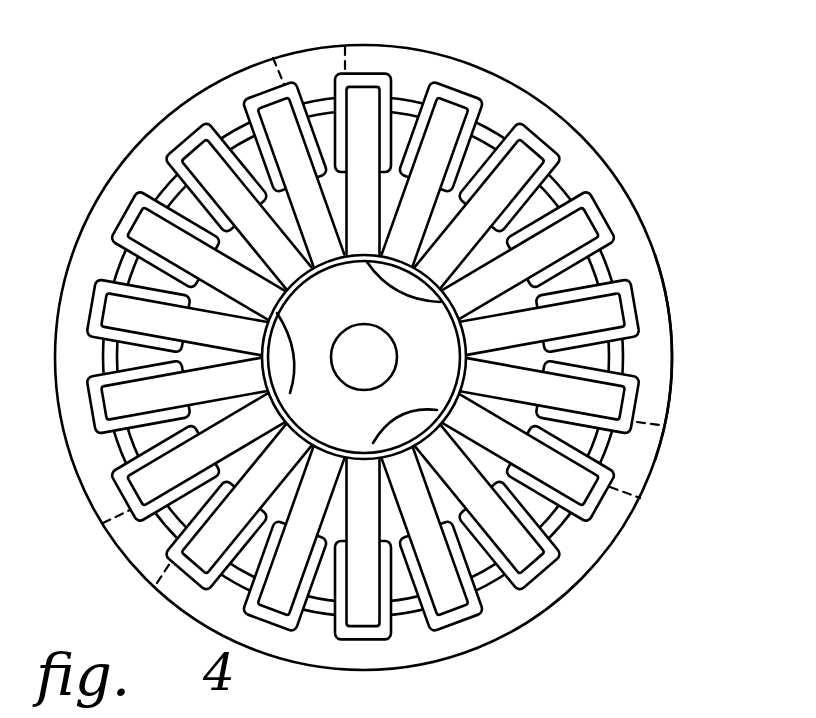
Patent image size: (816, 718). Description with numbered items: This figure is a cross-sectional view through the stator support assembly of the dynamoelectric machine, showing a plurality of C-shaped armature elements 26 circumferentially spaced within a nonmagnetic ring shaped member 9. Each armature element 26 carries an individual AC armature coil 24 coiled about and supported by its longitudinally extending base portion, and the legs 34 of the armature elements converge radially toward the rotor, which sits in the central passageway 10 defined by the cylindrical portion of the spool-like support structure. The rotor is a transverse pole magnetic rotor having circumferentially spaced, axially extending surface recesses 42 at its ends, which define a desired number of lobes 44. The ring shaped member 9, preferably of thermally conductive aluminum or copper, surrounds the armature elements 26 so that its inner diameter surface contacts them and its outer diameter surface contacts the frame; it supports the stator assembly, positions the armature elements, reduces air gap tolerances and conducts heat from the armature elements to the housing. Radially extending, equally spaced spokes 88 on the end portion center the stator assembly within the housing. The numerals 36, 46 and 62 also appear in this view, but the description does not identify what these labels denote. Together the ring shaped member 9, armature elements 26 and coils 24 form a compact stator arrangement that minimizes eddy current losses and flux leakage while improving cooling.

The ring shaped member 9 is at (603, 190).
The central passageway 10 is at (303, 277).
The AC armature coil 24 is at (673, 347).
The C-shaped armature element 26 is at (290, 84).
The leg 34 is at (605, 272).
The inner retaining ring 36 is at (497, 600).
The surface recess 42 is at (280, 364).
The lobe 44 is at (328, 397).
The shaft bore 46 is at (378, 364).
The spacer ring 62 is at (567, 166).
The spoke 88 is at (312, 55).